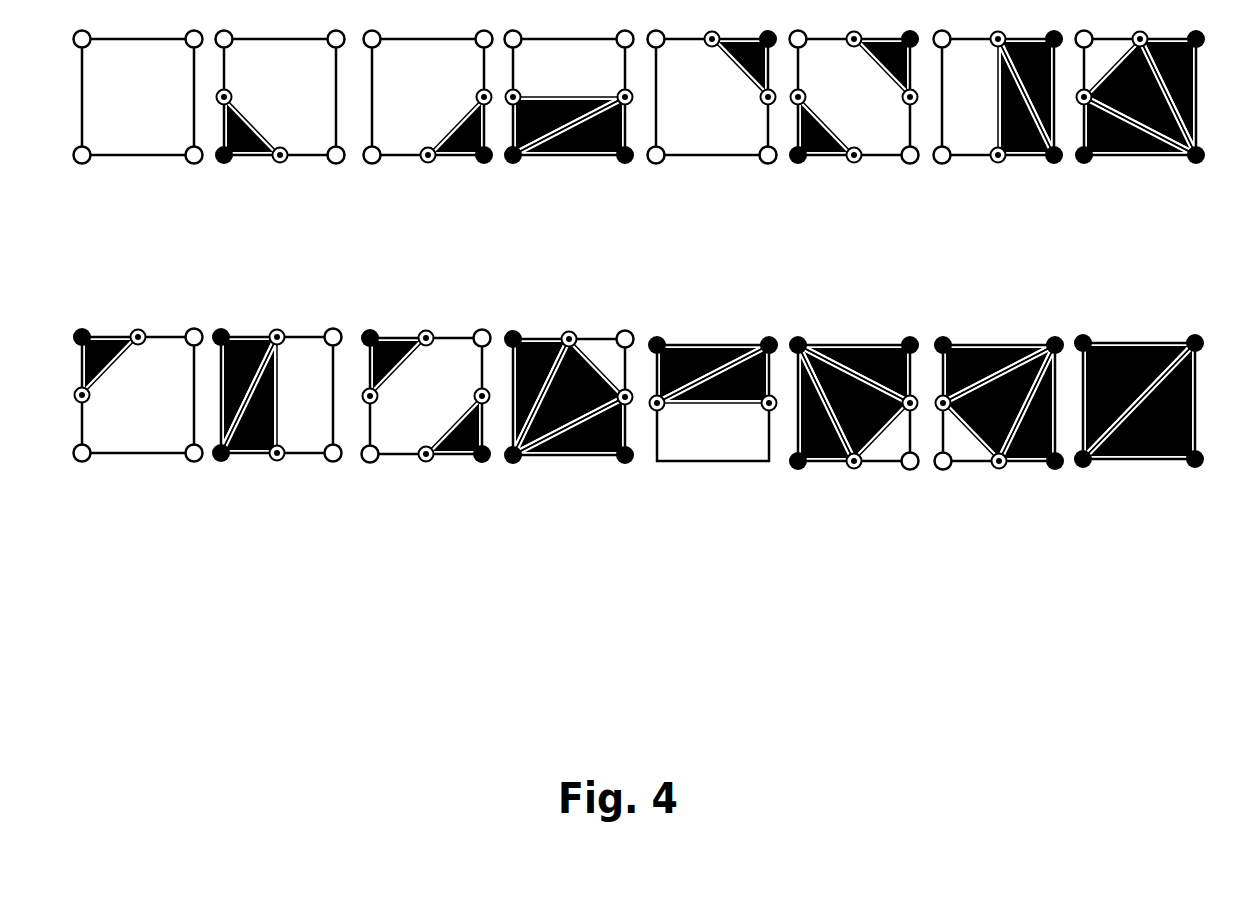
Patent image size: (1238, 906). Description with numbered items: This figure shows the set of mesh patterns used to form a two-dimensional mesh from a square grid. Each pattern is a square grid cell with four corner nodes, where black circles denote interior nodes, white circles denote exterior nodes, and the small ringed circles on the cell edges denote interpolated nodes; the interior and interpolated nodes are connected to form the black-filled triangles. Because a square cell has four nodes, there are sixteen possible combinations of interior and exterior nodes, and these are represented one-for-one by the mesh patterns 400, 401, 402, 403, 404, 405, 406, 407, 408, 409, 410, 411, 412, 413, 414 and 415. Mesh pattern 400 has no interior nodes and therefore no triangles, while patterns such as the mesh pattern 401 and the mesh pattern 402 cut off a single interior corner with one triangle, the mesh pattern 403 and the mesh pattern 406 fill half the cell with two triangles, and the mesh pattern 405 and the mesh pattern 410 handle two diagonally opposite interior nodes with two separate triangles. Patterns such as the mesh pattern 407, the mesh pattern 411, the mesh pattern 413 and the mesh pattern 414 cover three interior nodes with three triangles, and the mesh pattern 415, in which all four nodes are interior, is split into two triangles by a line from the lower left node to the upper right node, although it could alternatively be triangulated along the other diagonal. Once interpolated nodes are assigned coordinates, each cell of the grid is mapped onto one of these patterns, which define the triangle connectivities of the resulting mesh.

The mesh pattern 400 is at (138, 136).
The mesh pattern 401 is at (280, 136).
The mesh pattern 402 is at (429, 136).
The mesh pattern 403 is at (569, 136).
The mesh pattern 404 is at (713, 135).
The mesh pattern 405 is at (854, 135).
The mesh pattern 406 is at (999, 135).
The mesh pattern 407 is at (1140, 135).
The mesh pattern 408 is at (138, 439).
The mesh pattern 409 is at (277, 439).
The mesh pattern 410 is at (426, 439).
The mesh pattern 411 is at (569, 440).
The mesh pattern 412 is at (713, 443).
The mesh pattern 413 is at (854, 443).
The mesh pattern 414 is at (999, 443).
The mesh pattern 415 is at (1139, 442).